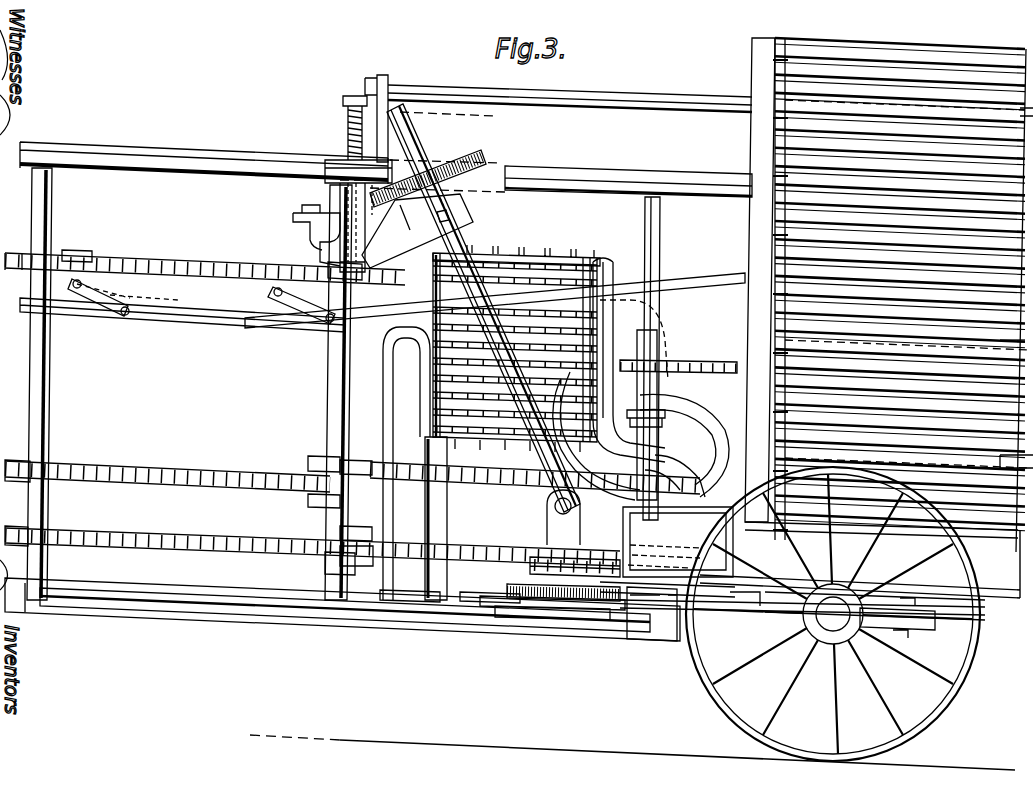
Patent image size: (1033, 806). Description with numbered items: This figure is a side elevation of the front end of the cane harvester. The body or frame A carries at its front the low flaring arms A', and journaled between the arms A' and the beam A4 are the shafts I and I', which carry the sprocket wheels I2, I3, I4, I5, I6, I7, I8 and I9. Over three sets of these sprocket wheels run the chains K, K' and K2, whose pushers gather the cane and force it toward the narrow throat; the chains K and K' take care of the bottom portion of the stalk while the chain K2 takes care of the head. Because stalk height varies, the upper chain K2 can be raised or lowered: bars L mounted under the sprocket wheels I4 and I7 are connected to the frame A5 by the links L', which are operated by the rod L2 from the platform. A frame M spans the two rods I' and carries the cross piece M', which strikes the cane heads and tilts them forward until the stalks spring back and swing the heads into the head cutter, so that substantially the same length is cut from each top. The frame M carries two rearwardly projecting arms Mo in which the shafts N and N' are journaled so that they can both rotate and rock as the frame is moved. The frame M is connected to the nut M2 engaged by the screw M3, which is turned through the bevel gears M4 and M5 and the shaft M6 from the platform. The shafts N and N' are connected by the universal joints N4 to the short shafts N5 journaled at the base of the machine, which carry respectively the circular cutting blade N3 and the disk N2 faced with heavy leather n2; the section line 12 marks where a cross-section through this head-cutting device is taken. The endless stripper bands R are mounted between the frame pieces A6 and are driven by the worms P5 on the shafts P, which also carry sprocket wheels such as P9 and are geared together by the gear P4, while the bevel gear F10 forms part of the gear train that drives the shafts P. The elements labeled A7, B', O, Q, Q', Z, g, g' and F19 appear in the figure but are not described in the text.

The body or frame A is at (826, 326).
The flaring arms A' is at (342, 617).
The beam A4 is at (205, 170).
The frame A5 is at (226, 318).
The frame pieces A6 is at (410, 386).
The post A7 is at (752, 130).
The wheel B' is at (844, 614).
The shaft I is at (45, 384).
The shaft I' is at (327, 392).
The sprocket wheel I2 is at (50, 532).
The sprocket wheel I3 is at (13, 464).
The sprocket wheel I4 is at (60, 255).
The sprocket wheel I5 is at (318, 562).
The sprocket wheel I6 is at (318, 492).
The sprocket wheel I7 is at (325, 265).
The sprocket wheel I8 is at (360, 533).
The sprocket wheel I9 is at (355, 460).
The chain K is at (312, 534).
The chain K' is at (352, 464).
The upper chain K2 is at (158, 266).
The bars L is at (159, 329).
The links L' is at (201, 314).
The rod L2 is at (730, 278).
The frame M is at (356, 227).
The cross piece M' is at (295, 235).
The nut M2 is at (333, 162).
The screw M3 is at (352, 95).
The bevel gear M4 is at (342, 100).
The bevel gear M5 is at (384, 78).
The shaft M6 is at (612, 98).
The rearwardly projecting arms Mo is at (470, 210).
The shaft N is at (483, 288).
The shaft N' is at (430, 574).
The disk N2 is at (460, 160).
The heavy leather facing n2 is at (485, 158).
The circular cutting blade N3 is at (548, 598).
The universal joint N4 is at (552, 508).
The short shafts N5 is at (540, 580).
The box O is at (625, 590).
The shaft P is at (646, 225).
The gear P4 is at (660, 572).
The worm P5 is at (648, 545).
The sprocket wheel P9 is at (670, 460).
The post Q is at (440, 518).
The grid Q' is at (515, 359).
The endless bands R is at (535, 268).
The pin Z is at (1016, 328).
The chain g is at (678, 353).
The shaft g' is at (676, 415).
The bevel gear F10 is at (660, 416).
The arc F19 is at (665, 432).
The section line 12 is at (300, 192).